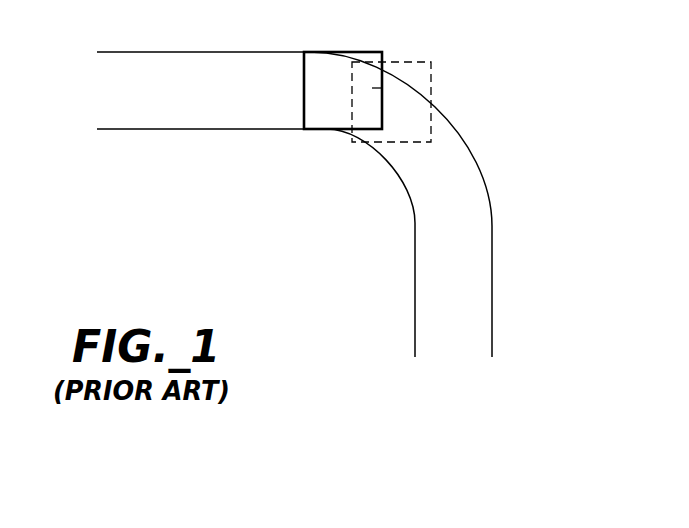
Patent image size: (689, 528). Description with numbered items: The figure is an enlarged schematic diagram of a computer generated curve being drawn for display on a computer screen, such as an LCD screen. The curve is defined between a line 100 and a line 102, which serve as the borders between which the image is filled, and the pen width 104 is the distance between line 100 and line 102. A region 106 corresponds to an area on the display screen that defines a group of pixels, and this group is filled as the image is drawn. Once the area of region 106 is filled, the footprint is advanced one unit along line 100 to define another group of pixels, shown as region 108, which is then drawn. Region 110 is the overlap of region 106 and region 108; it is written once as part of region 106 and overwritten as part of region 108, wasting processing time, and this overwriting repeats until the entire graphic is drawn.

The line 100 is at (415, 355).
The line 102 is at (492, 355).
The pen width 104 is at (81, 52).
The region 106 is at (363, 52).
The region 108 is at (433, 88).
The region 110 is at (383, 88).